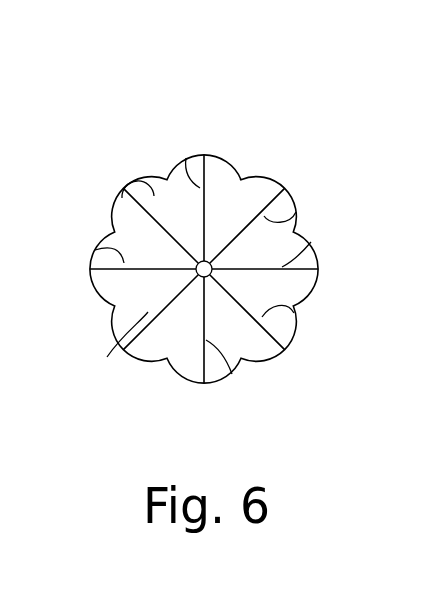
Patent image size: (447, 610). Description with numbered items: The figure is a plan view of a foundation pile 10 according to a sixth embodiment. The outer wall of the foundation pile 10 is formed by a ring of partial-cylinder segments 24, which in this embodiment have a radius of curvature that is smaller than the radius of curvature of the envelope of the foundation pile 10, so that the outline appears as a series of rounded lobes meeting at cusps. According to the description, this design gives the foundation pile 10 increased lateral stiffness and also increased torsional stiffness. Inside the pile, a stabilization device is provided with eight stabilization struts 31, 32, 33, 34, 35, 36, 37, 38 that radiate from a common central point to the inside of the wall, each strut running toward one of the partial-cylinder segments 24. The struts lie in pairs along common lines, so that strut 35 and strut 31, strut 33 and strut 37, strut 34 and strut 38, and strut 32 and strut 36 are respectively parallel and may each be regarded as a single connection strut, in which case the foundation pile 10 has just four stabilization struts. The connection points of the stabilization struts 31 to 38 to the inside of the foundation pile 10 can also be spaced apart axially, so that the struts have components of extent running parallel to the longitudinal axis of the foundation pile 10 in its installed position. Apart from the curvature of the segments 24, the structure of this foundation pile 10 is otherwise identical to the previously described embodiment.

The foundation pile 10 is at (102, 186).
The partial-cylinder segments 24 is at (255, 173).
The stabilization strut 31 is at (232, 374).
The stabilization strut 32 is at (107, 357).
The stabilization strut 33 is at (95, 250).
The stabilization strut 34 is at (140, 179).
The stabilization strut 35 is at (186, 158).
The stabilization strut 36 is at (296, 212).
The stabilization strut 37 is at (311, 242).
The stabilization strut 38 is at (294, 313).